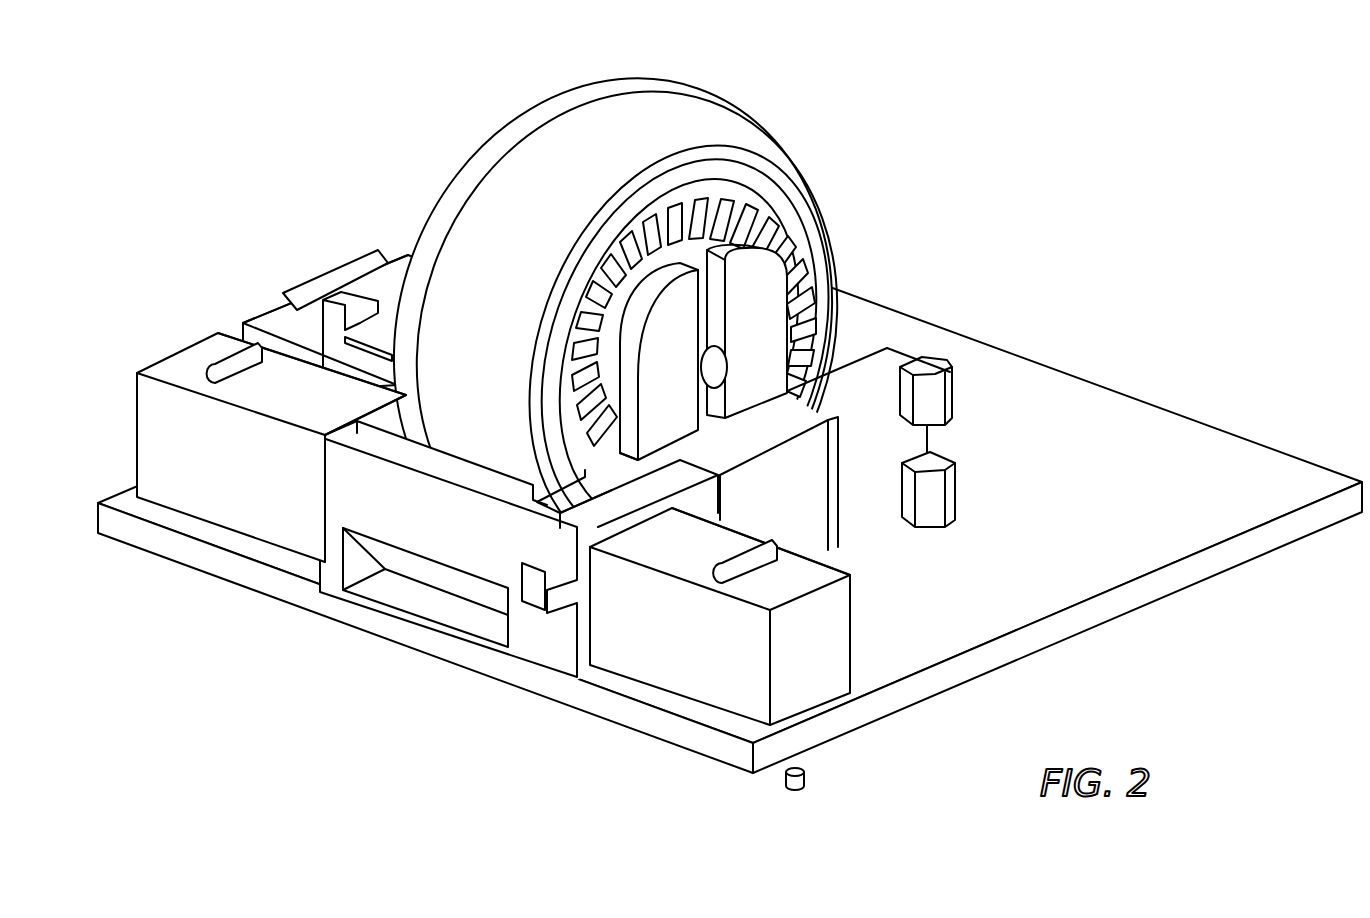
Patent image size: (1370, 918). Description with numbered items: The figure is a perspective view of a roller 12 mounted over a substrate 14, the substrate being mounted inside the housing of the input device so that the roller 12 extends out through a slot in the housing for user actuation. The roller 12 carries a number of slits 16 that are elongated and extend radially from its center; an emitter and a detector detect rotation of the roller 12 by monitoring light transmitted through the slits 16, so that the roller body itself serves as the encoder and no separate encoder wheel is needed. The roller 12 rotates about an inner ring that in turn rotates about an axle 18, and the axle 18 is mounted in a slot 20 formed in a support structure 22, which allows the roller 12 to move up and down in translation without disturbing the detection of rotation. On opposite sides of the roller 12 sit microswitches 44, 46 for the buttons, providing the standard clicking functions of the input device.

The roller 12 is at (667, 108).
The substrate 14 is at (1188, 450).
The slits 16 is at (738, 207).
The axle 18 is at (716, 367).
The slot 20 is at (401, 322).
The support structure 22 is at (655, 377).
The microswitch 44 is at (683, 662).
The microswitch 46 is at (206, 490).